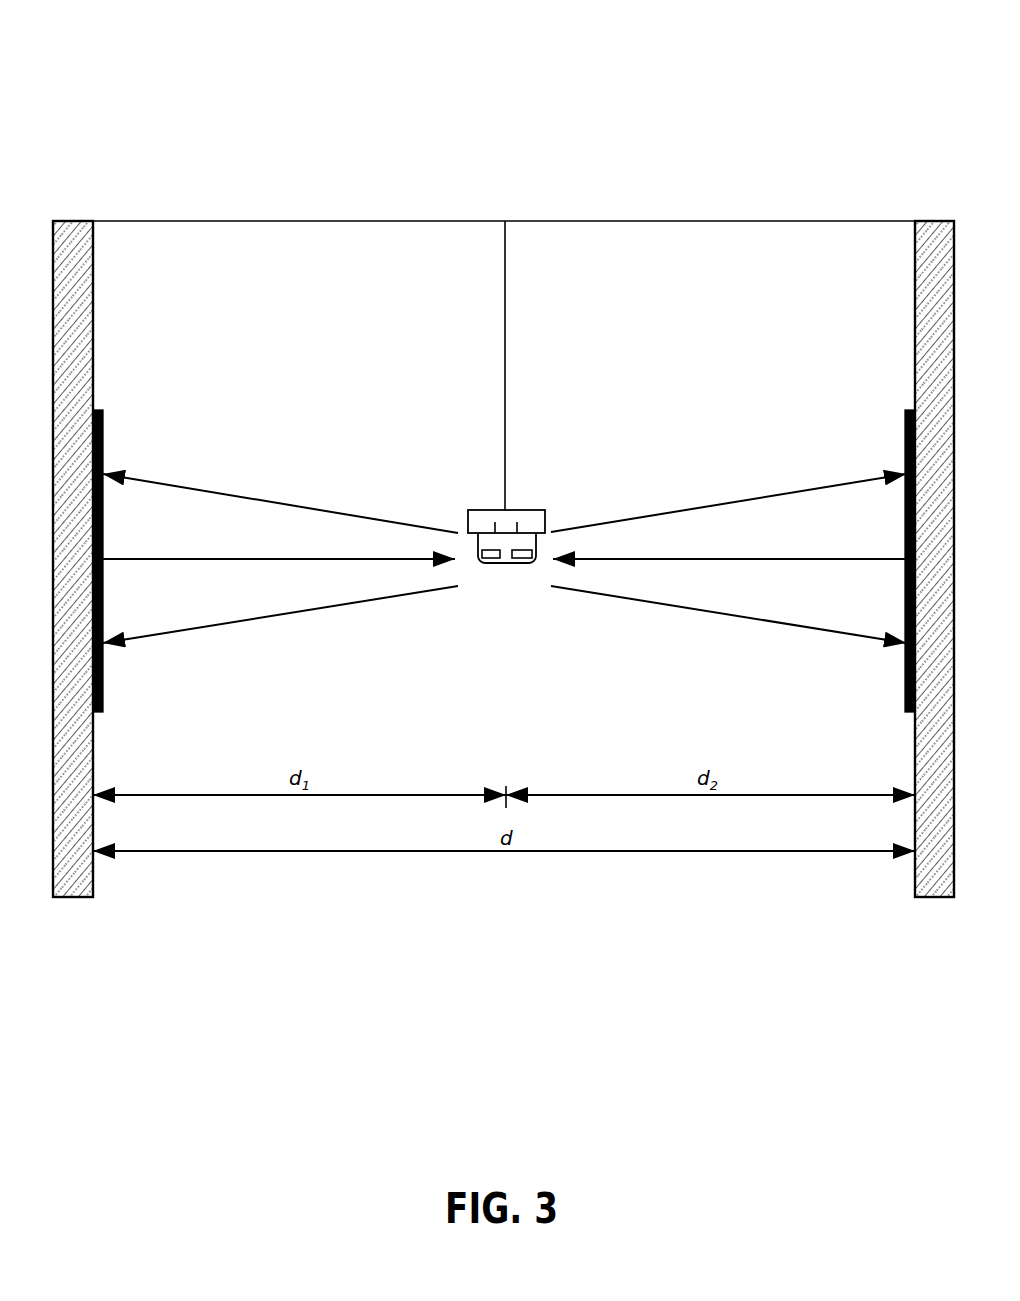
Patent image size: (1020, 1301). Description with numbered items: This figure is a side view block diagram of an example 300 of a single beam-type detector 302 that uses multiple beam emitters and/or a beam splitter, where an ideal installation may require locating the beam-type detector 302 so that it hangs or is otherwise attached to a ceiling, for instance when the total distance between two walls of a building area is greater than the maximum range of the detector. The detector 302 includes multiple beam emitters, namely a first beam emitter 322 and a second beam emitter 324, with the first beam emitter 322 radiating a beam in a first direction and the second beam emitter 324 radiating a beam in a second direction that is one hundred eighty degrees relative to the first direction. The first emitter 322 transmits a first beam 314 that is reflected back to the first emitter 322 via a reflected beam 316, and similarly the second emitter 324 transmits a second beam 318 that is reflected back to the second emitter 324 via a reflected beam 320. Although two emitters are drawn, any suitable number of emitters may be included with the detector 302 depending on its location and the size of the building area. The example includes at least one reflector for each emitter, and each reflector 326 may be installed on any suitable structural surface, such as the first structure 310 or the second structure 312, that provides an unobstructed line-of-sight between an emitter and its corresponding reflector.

The example 300 is at (138, 46).
The beam-type detector 302 is at (533, 510).
The first structure 310 is at (93, 297).
The second structure 312 is at (915, 297).
The first beam 314 is at (228, 494).
The reflected beam 316 is at (220, 558).
The second beam 318 is at (783, 494).
The reflected beam 320 is at (784, 558).
The first beam emitter 322 is at (497, 563).
The second beam emitter 324 is at (522, 563).
The reflector 326 is at (103, 410).